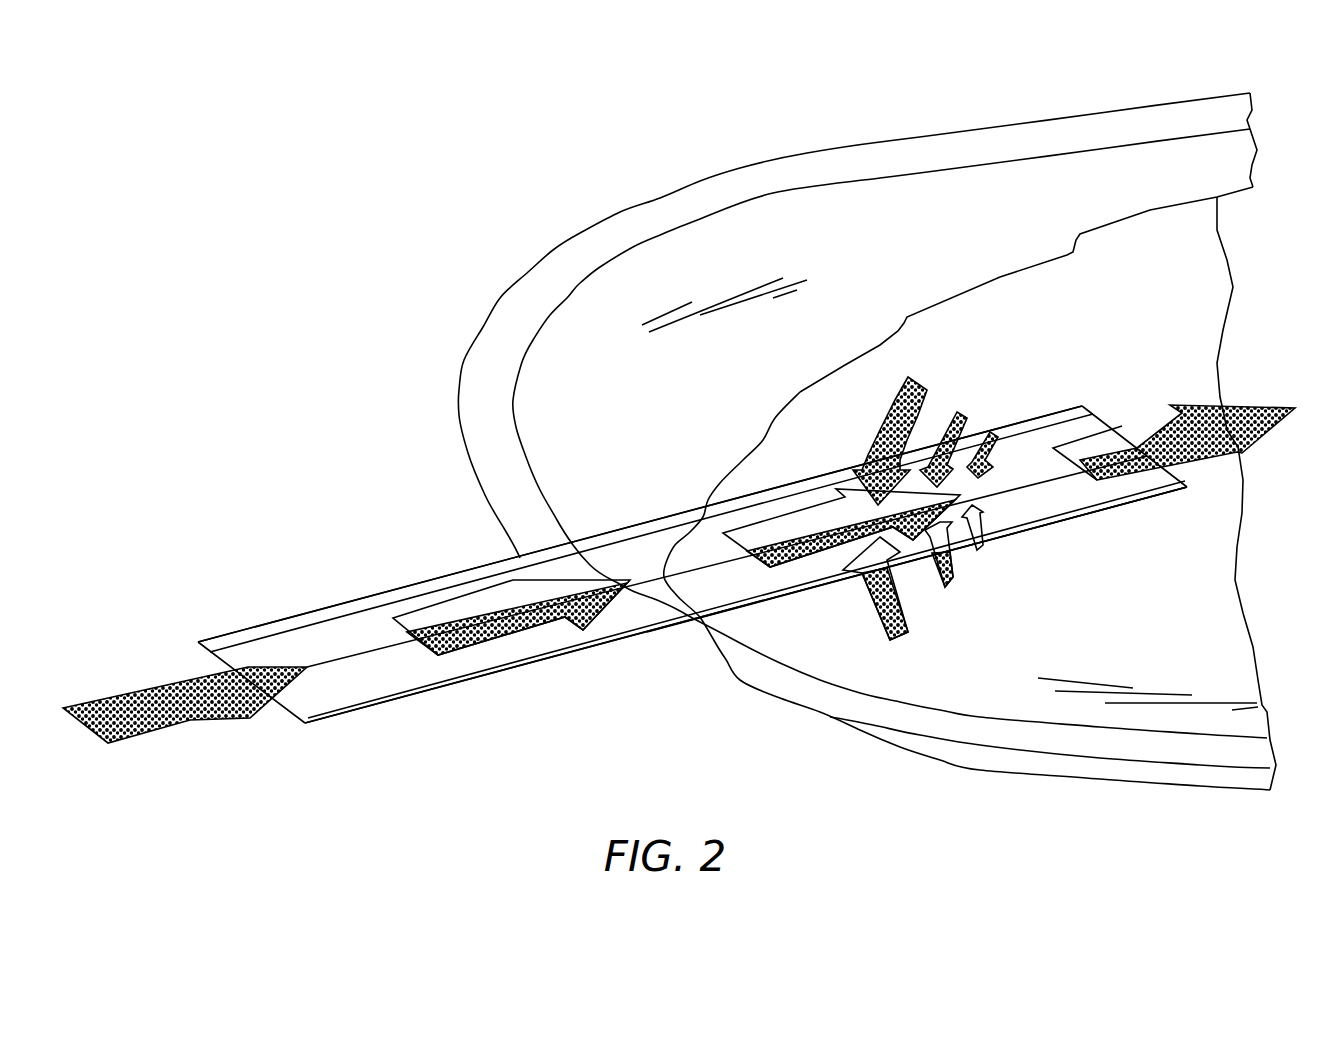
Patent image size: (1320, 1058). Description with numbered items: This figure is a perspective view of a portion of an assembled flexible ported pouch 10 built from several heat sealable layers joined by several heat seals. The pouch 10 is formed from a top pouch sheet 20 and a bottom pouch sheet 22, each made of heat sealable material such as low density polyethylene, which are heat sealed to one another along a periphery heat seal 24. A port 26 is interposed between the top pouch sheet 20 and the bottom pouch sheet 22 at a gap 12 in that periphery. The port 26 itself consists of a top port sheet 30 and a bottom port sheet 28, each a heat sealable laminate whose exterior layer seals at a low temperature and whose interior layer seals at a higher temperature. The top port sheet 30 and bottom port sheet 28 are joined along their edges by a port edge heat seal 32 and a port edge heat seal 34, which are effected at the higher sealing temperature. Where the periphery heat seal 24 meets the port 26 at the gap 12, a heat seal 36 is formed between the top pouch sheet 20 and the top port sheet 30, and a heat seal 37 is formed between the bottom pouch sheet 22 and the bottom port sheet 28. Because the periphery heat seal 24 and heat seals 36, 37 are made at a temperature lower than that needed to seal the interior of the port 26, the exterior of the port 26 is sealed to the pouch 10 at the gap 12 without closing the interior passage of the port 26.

The flexible ported pouch 10 is at (388, 385).
The gap 12 is at (662, 556).
The top pouch sheet 20 is at (830, 265).
The bottom pouch sheet 22 is at (1060, 773).
The periphery heat seal 24 is at (767, 688).
The port 26 is at (180, 647).
The bottom port sheet 28 is at (347, 713).
The top port sheet 30 is at (345, 630).
The port edge heat seal 32 is at (497, 668).
The port edge heat seal 34 is at (468, 575).
The heat seal 36 is at (635, 580).
The heat seal 37 is at (650, 632).